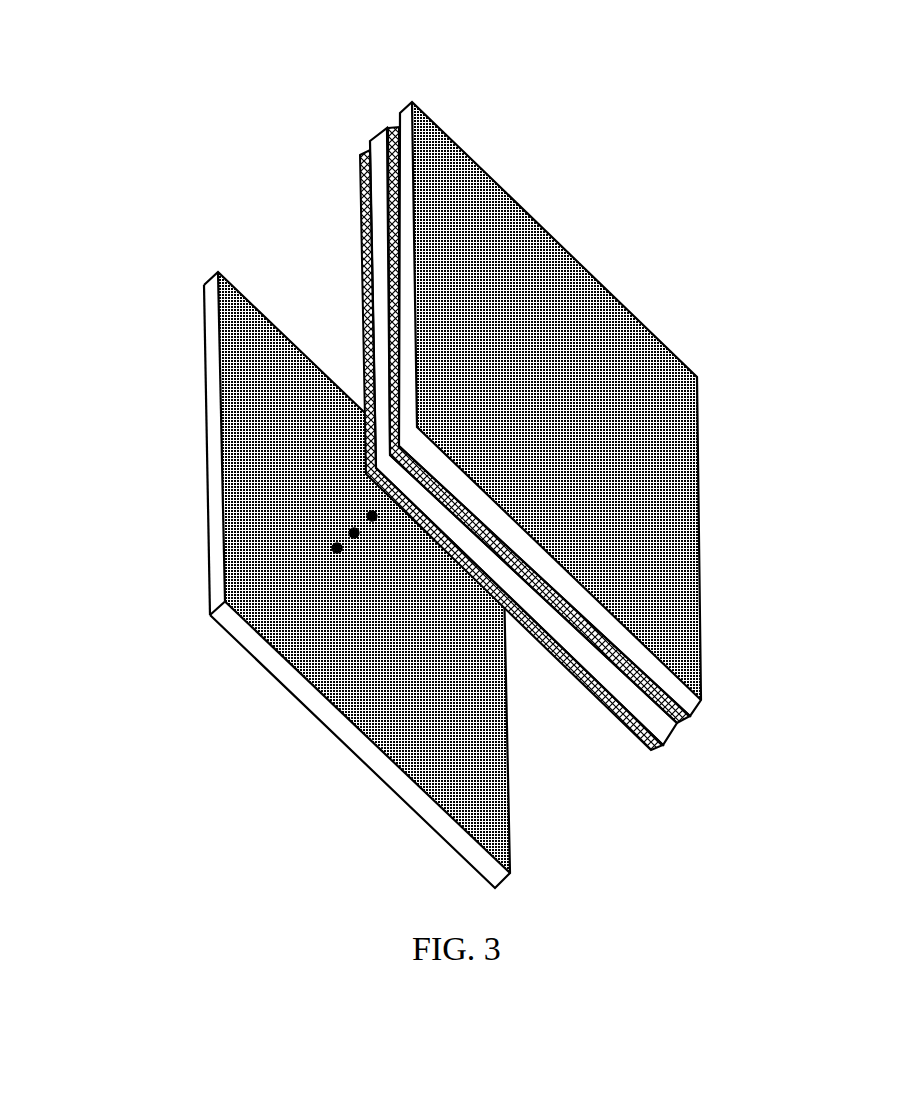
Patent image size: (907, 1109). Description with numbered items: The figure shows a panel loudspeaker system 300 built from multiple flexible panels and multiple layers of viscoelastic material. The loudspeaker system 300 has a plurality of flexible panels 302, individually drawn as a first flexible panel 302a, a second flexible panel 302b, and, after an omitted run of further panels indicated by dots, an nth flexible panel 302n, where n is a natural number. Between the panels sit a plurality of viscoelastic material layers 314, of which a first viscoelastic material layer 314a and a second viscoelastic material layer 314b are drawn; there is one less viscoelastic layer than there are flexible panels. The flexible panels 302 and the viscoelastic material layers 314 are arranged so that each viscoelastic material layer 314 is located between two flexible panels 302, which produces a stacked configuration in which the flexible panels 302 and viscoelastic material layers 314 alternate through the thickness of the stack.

The loudspeaker system 300 is at (257, 641).
The flexible panels 302 is at (432, 460).
The flexible panel 302a is at (399, 108).
The flexible panel 302b is at (378, 132).
The flexible panel 302n is at (208, 302).
The viscoelastic material layers 314 is at (554, 486).
The viscoelastic material layer 314a is at (690, 717).
The viscoelastic material layer 314b is at (651, 749).